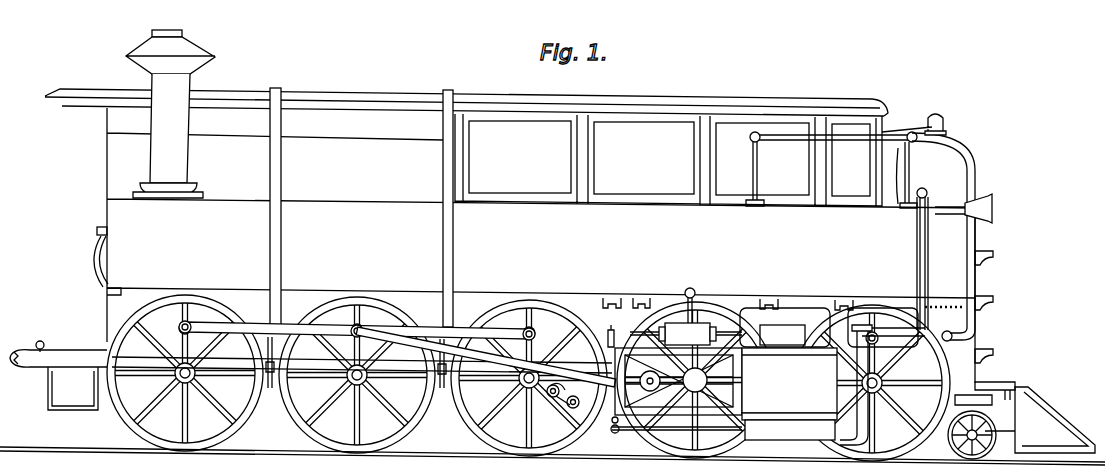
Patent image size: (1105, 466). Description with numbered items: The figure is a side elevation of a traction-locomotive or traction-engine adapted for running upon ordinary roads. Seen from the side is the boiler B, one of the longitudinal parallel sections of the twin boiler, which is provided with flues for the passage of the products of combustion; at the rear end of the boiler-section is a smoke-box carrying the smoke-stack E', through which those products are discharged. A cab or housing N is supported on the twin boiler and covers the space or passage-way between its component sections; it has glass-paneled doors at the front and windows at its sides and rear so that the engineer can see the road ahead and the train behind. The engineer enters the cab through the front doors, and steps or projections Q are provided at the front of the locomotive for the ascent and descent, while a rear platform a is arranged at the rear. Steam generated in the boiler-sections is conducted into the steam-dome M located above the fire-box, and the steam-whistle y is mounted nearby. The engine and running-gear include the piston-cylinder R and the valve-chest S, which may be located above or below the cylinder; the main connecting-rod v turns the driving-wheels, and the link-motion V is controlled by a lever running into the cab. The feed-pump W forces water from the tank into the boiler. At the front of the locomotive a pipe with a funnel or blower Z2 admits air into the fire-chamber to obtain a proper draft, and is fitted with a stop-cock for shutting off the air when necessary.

The smoke-stack E' is at (170, 114).
The cab N is at (466, 97).
The boiler B is at (541, 245).
The steam-whistle y is at (944, 129).
The steam-dome M is at (943, 237).
The funnel or blower Z2 is at (977, 208).
The exhaust pipe T is at (902, 316).
The steps Q is at (991, 307).
The rear platform a is at (58, 372).
The main connecting-rod v is at (486, 357).
The link-motion V is at (566, 400).
The feed-pump W is at (686, 316).
The piston-cylinder R is at (789, 380).
The valve-chest S is at (789, 436).